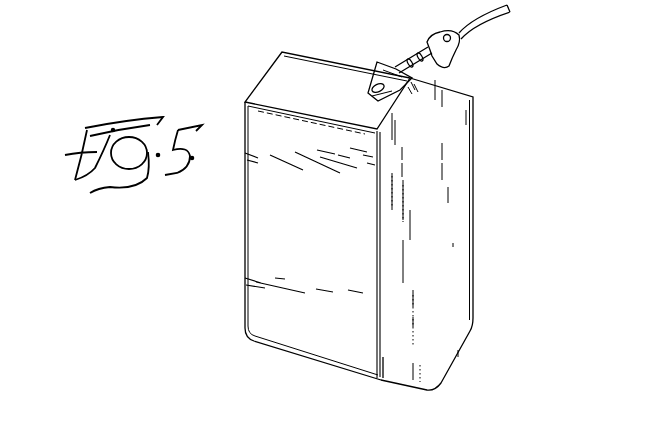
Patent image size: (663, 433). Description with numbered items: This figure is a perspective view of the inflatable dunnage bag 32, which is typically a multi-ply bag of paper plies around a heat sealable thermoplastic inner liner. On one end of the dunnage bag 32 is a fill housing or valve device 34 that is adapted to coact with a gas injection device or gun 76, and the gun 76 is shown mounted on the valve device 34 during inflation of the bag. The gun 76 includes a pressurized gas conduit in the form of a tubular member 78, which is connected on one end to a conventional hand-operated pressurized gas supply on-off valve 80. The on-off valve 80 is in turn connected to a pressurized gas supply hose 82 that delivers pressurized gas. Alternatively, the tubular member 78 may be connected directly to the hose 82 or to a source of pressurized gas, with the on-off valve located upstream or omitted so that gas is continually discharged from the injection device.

The dunnage bag 32 is at (455, 218).
The valve device 34 is at (398, 108).
The gas injection device 76 is at (416, 50).
The tubular member 78 is at (395, 67).
The on-off valve 80 is at (432, 37).
The pressurized gas supply hose 82 is at (486, 27).